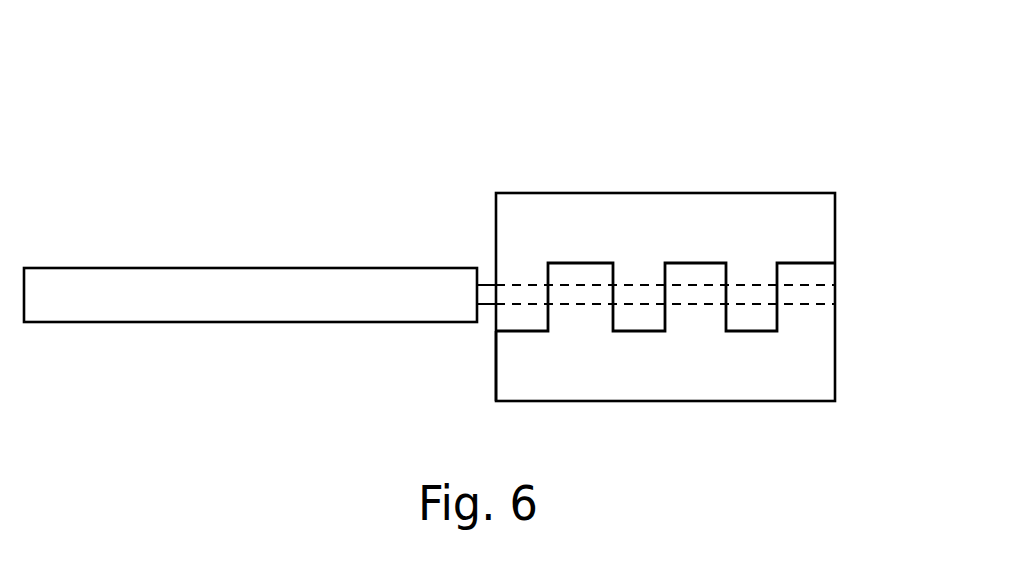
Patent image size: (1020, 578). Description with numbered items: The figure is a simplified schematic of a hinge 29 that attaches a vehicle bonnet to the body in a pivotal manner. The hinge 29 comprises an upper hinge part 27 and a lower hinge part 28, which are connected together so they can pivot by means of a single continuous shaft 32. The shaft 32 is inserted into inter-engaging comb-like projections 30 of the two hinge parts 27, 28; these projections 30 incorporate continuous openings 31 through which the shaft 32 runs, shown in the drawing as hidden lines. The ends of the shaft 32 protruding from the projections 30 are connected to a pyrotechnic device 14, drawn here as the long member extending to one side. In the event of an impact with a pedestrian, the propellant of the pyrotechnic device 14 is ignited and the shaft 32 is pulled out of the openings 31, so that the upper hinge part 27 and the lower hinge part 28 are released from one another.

The pyrotechnic device 14 is at (158, 262).
The upper hinge part 27 is at (509, 192).
The lower hinge part 28 is at (496, 377).
The hinge 29 is at (670, 232).
The comb-like projections 30 is at (823, 272).
The continuous openings 31 is at (665, 255).
The shaft 32 is at (490, 283).